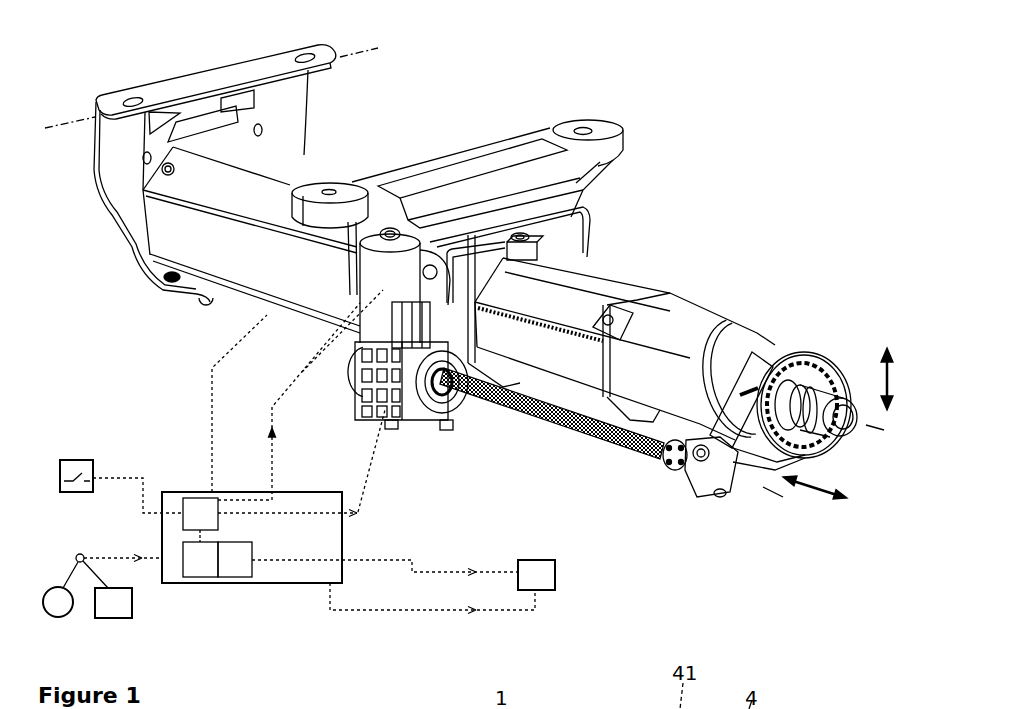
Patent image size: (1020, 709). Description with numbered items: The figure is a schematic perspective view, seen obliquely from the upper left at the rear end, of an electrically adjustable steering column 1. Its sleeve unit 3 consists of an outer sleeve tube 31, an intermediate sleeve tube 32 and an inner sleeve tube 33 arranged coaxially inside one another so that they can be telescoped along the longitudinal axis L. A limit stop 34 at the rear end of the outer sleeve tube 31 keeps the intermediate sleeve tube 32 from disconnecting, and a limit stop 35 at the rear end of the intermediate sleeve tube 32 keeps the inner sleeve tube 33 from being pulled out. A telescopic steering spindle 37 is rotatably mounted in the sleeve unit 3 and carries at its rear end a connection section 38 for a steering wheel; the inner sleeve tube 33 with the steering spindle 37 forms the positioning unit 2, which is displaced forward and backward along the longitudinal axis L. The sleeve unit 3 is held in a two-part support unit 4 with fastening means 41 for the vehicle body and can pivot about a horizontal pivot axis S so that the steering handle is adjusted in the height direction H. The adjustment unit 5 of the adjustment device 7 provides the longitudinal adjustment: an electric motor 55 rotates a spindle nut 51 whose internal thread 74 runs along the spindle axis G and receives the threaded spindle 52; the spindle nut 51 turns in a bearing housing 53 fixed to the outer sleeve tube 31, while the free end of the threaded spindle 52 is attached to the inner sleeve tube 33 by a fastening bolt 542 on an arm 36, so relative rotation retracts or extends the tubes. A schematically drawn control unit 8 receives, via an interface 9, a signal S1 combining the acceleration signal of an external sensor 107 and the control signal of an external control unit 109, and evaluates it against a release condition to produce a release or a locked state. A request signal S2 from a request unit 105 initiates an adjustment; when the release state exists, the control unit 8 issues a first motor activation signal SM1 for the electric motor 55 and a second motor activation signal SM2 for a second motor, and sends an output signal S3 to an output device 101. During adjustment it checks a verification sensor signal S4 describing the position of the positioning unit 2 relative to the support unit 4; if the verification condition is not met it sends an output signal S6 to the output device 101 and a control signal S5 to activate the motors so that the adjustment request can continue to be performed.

The steering column 1 is at (652, 97).
The positioning unit 2 is at (703, 310).
The sleeve unit 3 is at (340, 158).
The support unit 4 is at (118, 162).
The adjustment unit 5 is at (358, 420).
The adjustment device 7 is at (388, 440).
The control unit 8 is at (265, 584).
The interface 9 is at (80, 554).
The outer sleeve tube 31 is at (257, 275).
The intermediate sleeve tube 32 is at (552, 363).
The inner sleeve tube 33 is at (712, 325).
The limit stop 34 is at (530, 250).
The limit stop 35 is at (662, 462).
The arm 36 is at (740, 402).
The steering spindle 37 is at (792, 395).
The connection section 38 is at (838, 376).
The fastening means 41 is at (132, 98).
The spindle nut 51 is at (442, 415).
The threaded spindle 52 is at (607, 447).
The bearing housing 53 is at (360, 385).
The electric motor 55 is at (380, 290).
The internal thread 74 is at (423, 430).
The output device 101 is at (557, 575).
The request unit 105 is at (79, 459).
The external sensor 107 is at (60, 617).
The external control unit 109 is at (112, 618).
The fastening bolt 542 is at (700, 492).
The pivot axis S is at (377, 47).
The height direction H is at (893, 380).
The longitudinal axis L is at (884, 430).
The spindle axis G is at (778, 492).
The signal S1 is at (123, 573).
The request signal S2 is at (138, 495).
The output signal S3 is at (385, 563).
The verification sensor signal S4 is at (227, 403).
The control signal S5 is at (331, 401).
The output signal S6 is at (432, 611).
The first motor activation signal SM1 is at (303, 524).
The second motor activation signal SM2 is at (289, 401).